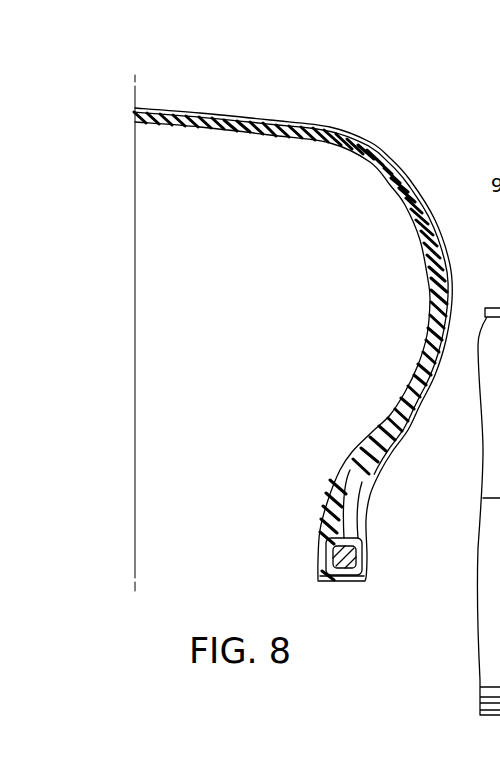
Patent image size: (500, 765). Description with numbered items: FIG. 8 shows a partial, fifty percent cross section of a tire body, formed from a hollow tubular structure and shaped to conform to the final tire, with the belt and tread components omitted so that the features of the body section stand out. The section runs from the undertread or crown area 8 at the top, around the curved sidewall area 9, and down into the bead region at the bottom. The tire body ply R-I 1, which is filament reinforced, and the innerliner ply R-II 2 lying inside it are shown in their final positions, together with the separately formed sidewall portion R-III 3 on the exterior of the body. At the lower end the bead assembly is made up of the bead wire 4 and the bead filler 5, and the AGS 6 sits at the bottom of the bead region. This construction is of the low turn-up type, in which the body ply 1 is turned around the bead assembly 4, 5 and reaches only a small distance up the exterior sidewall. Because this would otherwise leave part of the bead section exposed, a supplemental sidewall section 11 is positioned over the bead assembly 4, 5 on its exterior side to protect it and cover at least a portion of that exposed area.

The tire body ply R-I 1 is at (388, 152).
The innerliner ply R-II 2 is at (342, 474).
The sidewall portion R-III 3 is at (412, 187).
The bead wire 4 is at (357, 563).
The bead filler 5 is at (358, 519).
The AGS 6 is at (342, 586).
The undertread (crown) area 8 is at (206, 103).
The sidewall area 9 is at (463, 299).
The supplemental sidewall section 11 is at (372, 483).